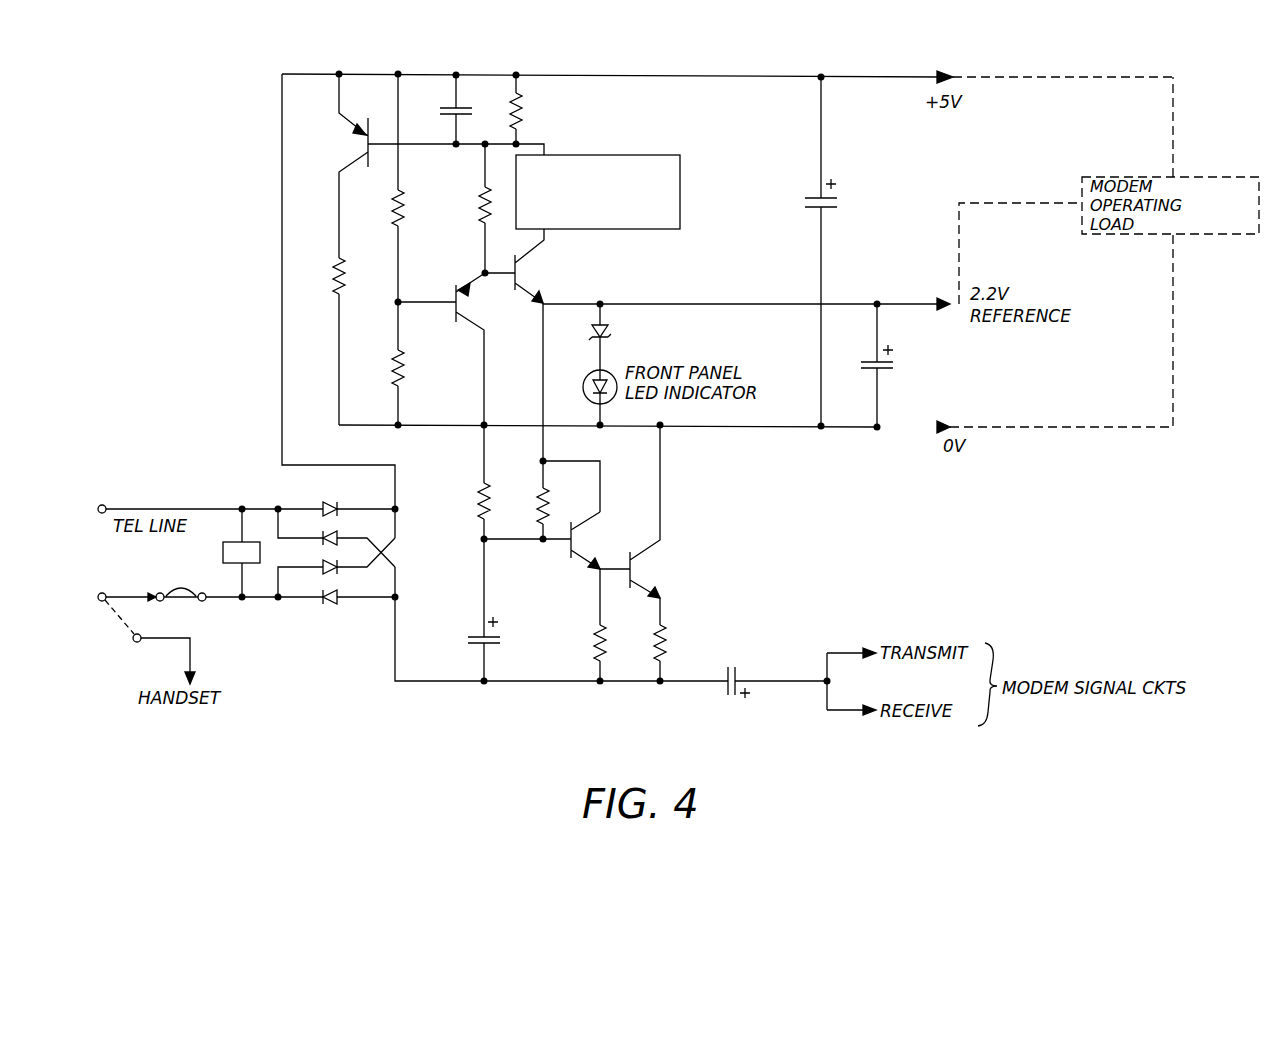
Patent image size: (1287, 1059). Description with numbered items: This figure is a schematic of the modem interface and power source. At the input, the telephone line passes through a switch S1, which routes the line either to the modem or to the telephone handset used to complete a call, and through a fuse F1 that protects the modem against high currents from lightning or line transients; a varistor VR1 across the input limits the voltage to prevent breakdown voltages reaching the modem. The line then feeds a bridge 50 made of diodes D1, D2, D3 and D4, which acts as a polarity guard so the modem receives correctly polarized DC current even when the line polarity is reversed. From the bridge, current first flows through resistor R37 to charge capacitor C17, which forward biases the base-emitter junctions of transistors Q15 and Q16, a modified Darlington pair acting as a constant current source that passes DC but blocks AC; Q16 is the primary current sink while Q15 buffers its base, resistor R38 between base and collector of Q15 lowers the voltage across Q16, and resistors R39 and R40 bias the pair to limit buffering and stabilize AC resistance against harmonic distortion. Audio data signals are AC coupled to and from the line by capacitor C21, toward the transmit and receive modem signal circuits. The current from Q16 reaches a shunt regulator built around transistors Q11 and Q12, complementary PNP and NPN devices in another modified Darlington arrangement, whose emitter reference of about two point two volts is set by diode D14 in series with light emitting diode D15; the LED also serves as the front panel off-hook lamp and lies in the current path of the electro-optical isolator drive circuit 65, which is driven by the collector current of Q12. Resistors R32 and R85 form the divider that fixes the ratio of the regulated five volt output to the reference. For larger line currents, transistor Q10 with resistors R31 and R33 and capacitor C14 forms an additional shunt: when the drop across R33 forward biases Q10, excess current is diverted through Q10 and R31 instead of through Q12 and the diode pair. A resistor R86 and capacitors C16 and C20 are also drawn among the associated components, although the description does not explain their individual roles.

The electro-optical isolator drive circuit 65 is at (680, 185).
The bridge 50 is at (336, 568).
The transistor Q10 is at (381, 166).
The transistor Q11 is at (451, 349).
The transistor Q12 is at (527, 327).
The transistor Q15 is at (600, 568).
The transistor Q16 is at (656, 525).
The resistor R31 is at (318, 341).
The resistor R32 is at (377, 188).
The resistor R33 is at (535, 109).
The resistor R37 is at (461, 482).
The resistor R38 is at (560, 482).
The resistor R39 is at (580, 653).
The resistor R40 is at (678, 653).
The resistor R85 is at (416, 363).
The resistor R86 is at (465, 208).
The capacitor C14 is at (468, 109).
The capacitor C16 is at (896, 365).
The capacitor C17 is at (502, 610).
The capacitor C20 is at (839, 251).
The capacitor C21 is at (735, 696).
The diode D1 is at (345, 589).
The diode D2 is at (345, 559).
The diode D3 is at (345, 531).
The diode D4 is at (345, 501).
The diode D14 is at (622, 337).
The light emitting diode D15 is at (582, 397).
The varistor VR1 is at (241, 553).
The switch S1 is at (127, 606).
The fuse F1 is at (181, 606).